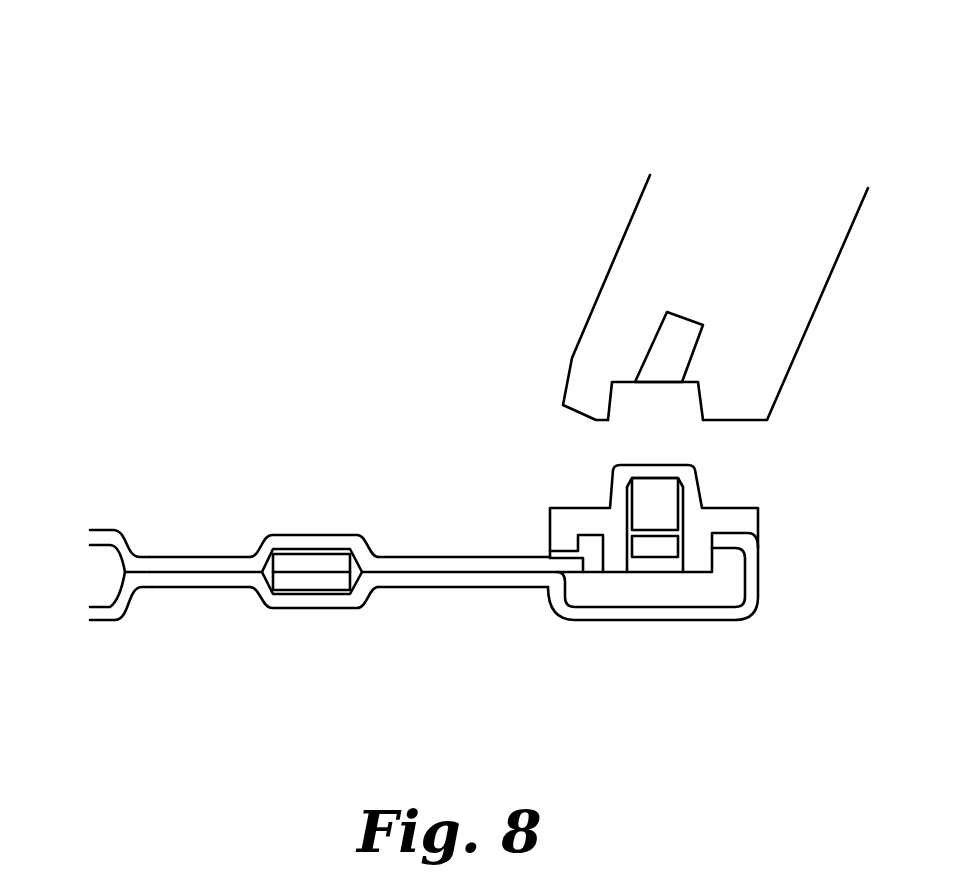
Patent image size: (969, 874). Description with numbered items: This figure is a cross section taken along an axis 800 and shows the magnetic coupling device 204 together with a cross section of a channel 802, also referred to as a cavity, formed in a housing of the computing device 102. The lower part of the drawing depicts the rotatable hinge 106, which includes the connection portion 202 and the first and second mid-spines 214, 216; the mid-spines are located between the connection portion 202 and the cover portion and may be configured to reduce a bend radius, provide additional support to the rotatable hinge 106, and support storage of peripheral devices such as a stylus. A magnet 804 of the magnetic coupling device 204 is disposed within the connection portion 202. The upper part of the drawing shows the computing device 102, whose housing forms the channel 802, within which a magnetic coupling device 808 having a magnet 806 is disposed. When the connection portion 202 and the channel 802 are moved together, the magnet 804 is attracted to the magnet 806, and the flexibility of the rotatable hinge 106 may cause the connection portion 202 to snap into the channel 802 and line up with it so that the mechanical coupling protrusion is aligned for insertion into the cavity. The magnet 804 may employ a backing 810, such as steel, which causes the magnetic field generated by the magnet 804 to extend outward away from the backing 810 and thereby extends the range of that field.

The axis 800 is at (175, 80).
The computing device 102 is at (590, 192).
The rotatable hinge 106 is at (297, 390).
The connection portion 202 is at (778, 695).
The magnetic coupling device 204 is at (590, 458).
The first mid-spine 214 is at (307, 510).
The second mid-spine 216 is at (90, 510).
The channel 802 is at (700, 378).
The magnet 804 is at (655, 480).
The magnet 806 is at (684, 315).
The magnetic coupling device 808 is at (563, 293).
The backing 810 is at (655, 545).